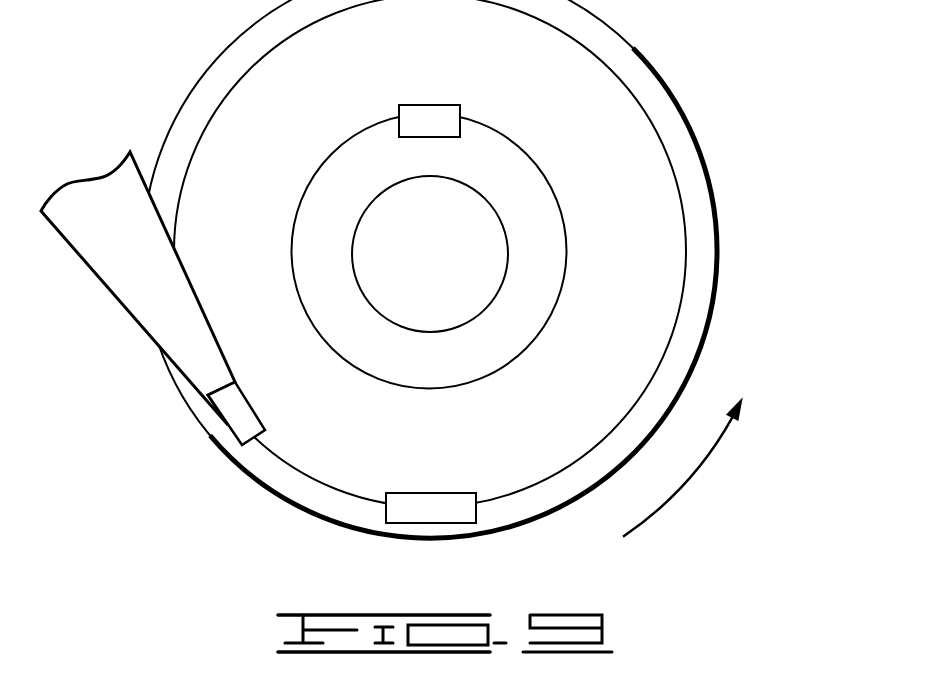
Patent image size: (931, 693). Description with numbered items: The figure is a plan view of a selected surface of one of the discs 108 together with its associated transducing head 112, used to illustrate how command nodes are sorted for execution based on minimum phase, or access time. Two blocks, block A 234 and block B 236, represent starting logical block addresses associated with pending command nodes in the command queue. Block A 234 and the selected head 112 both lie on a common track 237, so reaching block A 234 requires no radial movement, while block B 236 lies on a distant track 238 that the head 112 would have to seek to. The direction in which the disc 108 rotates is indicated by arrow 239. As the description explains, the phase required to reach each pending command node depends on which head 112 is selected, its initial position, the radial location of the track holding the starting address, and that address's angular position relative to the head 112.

The disc 108 is at (673, 98).
The transducing head 112 is at (227, 427).
The block A 234 is at (430, 493).
The block B 236 is at (429, 105).
The common track 237 is at (685, 227).
The distant track 238 is at (540, 167).
The arrow 239 is at (690, 478).